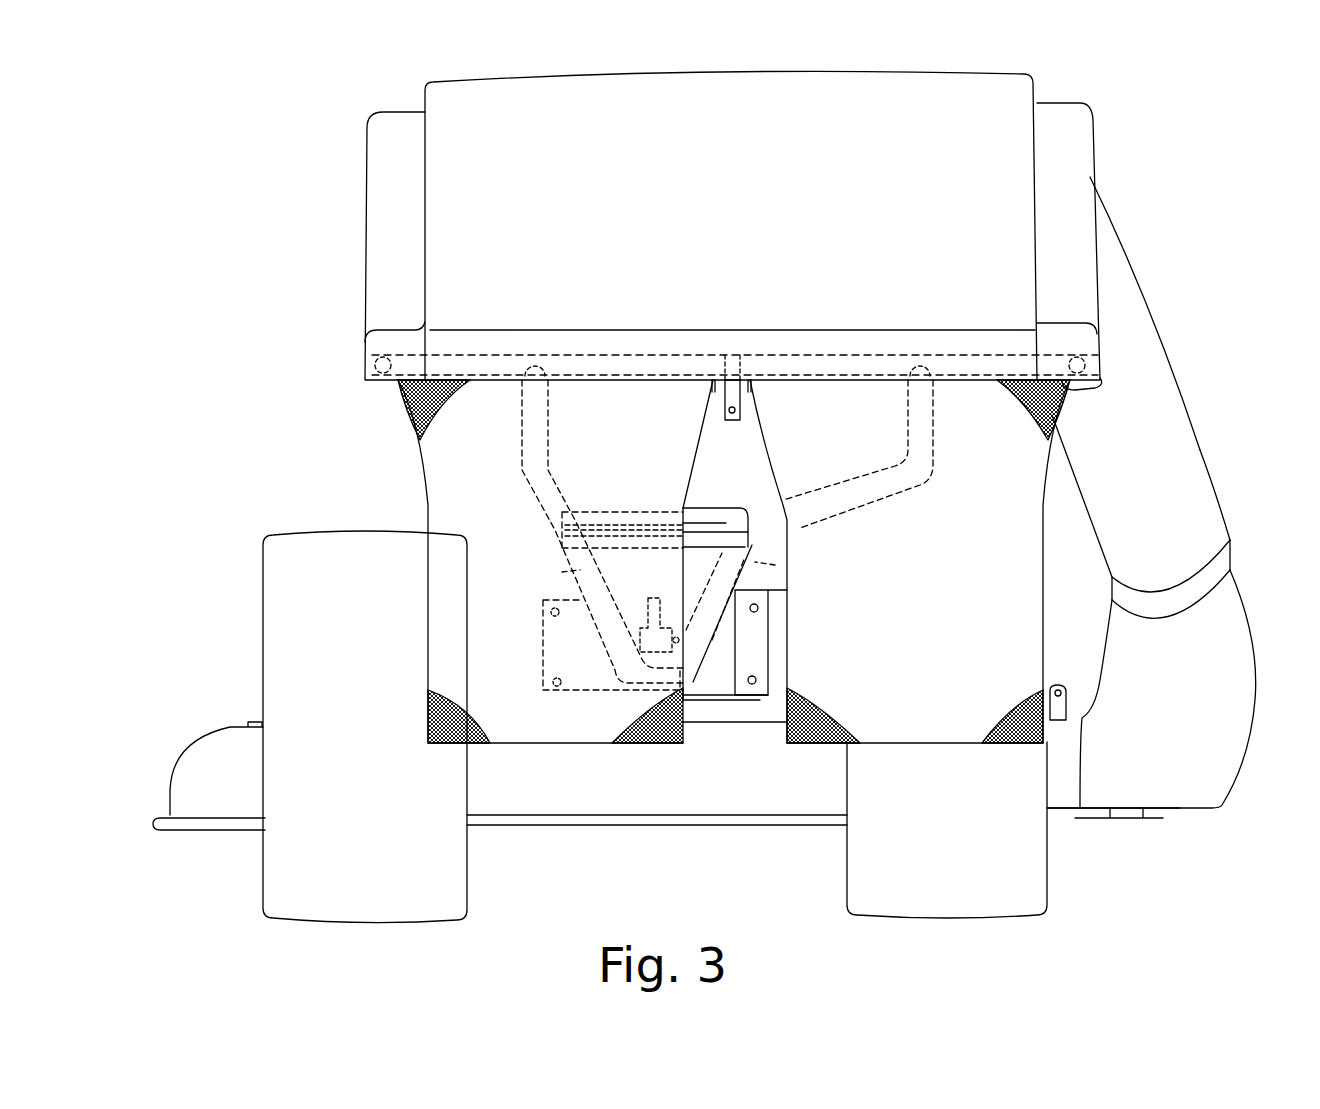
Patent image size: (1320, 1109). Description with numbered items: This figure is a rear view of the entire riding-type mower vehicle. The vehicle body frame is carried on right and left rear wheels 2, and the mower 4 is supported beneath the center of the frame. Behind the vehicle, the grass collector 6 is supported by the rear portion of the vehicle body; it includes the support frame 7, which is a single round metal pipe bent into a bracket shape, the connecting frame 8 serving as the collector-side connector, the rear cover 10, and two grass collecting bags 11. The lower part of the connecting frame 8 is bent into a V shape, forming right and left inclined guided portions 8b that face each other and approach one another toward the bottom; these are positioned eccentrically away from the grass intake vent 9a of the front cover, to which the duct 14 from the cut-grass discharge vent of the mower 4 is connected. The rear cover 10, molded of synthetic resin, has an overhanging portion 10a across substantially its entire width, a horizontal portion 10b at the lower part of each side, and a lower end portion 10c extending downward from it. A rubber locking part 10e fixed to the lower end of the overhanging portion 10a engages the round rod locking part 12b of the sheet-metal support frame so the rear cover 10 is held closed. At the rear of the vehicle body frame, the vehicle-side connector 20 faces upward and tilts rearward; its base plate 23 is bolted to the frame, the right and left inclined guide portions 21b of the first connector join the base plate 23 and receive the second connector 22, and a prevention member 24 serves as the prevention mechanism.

The rear wheels 2 is at (462, 865).
The mower 4 is at (205, 755).
The grass collector 6 is at (300, 147).
The support frame 7 is at (600, 355).
The connecting frame 8 is at (855, 500).
The inclined guided portions 8b is at (562, 572).
The grass intake vent 9a is at (1125, 250).
The rear cover 10 is at (367, 243).
The overhanging portion 10a is at (1007, 120).
The horizontal portion 10b is at (393, 330).
The lower end portion 10c is at (365, 355).
The locking part 10e is at (742, 400).
The grass collecting bags 11 is at (552, 728).
The locking part 12b is at (725, 412).
The duct 14 is at (1180, 410).
The vehicle-side connector 20 is at (722, 630).
The inclined guide portions 21b is at (592, 625).
The second connector 22 is at (700, 522).
The base plate 23 is at (708, 673).
The prevention member 24 is at (650, 643).